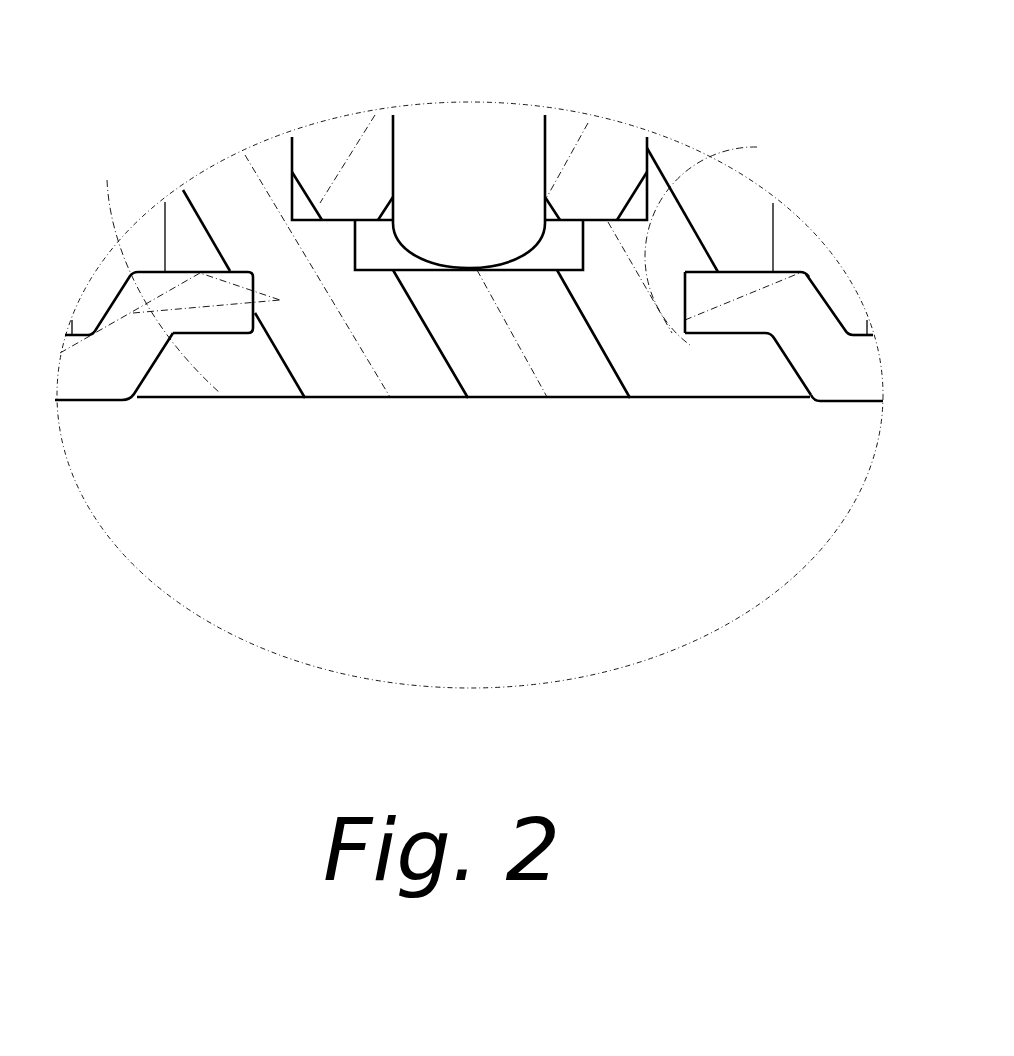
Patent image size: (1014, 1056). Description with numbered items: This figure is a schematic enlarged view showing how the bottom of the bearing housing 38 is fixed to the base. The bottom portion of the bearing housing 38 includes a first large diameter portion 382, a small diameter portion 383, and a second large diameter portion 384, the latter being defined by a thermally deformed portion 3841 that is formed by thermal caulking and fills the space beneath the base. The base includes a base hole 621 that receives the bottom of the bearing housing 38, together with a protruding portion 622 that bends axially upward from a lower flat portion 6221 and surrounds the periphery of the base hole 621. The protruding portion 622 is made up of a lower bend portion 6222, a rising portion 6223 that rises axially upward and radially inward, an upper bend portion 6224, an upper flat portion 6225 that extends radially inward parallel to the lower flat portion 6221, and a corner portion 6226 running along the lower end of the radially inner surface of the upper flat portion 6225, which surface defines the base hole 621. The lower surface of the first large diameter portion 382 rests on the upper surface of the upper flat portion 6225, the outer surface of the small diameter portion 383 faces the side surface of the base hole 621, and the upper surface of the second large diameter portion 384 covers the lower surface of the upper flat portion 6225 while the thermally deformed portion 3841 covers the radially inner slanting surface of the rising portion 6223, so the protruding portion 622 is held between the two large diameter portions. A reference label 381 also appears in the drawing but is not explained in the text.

The bearing housing 38 is at (264, 63).
The first bracket portion 381 is at (292, 137).
The first large diameter portion 382 is at (200, 185).
The small diameter portion 383 is at (165, 200).
The second large diameter portion 384 is at (118, 250).
The thermally deformed portion 3841 is at (147, 373).
The base hole 621 is at (757, 147).
The protruding portion 622 is at (207, 337).
The lower flat portion 6221 is at (875, 367).
The lower bend portion 6222 is at (868, 316).
The rising portion 6223 is at (790, 352).
The upper bend portion 6224 is at (795, 262).
The upper flat portion 6225 is at (760, 335).
The corner portion 6226 is at (683, 335).